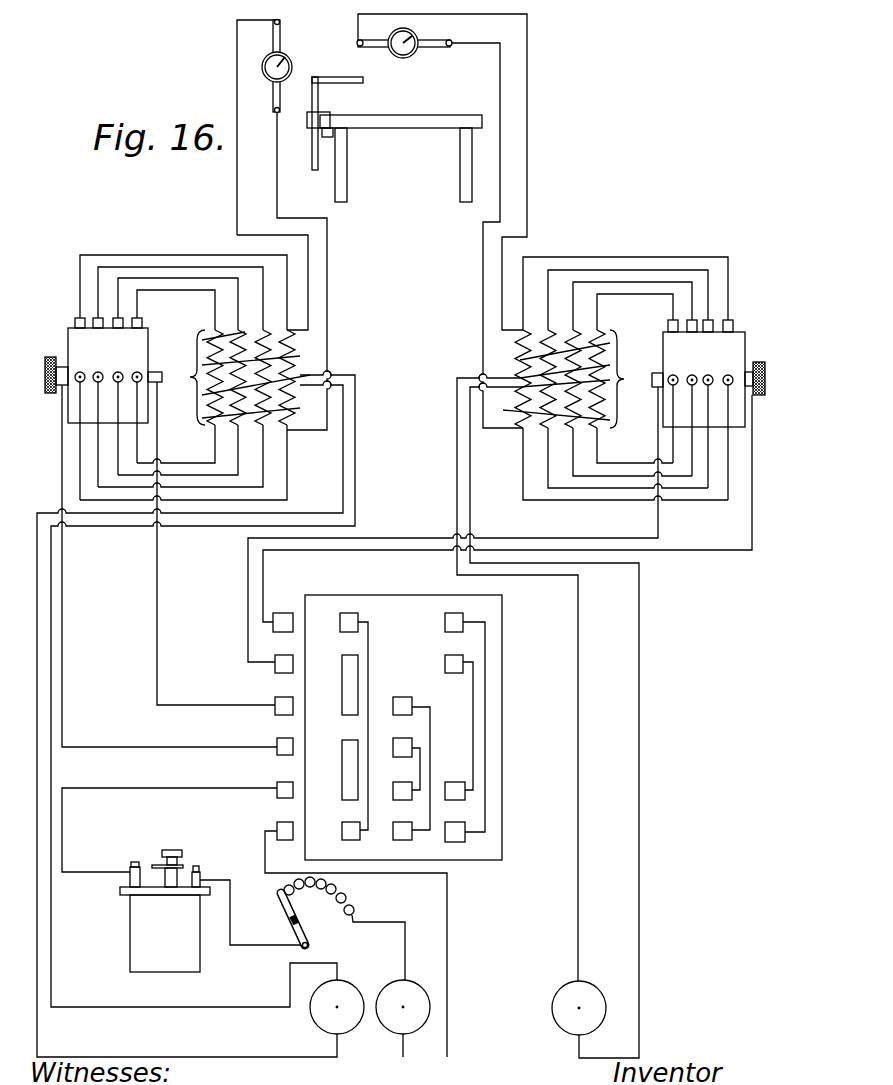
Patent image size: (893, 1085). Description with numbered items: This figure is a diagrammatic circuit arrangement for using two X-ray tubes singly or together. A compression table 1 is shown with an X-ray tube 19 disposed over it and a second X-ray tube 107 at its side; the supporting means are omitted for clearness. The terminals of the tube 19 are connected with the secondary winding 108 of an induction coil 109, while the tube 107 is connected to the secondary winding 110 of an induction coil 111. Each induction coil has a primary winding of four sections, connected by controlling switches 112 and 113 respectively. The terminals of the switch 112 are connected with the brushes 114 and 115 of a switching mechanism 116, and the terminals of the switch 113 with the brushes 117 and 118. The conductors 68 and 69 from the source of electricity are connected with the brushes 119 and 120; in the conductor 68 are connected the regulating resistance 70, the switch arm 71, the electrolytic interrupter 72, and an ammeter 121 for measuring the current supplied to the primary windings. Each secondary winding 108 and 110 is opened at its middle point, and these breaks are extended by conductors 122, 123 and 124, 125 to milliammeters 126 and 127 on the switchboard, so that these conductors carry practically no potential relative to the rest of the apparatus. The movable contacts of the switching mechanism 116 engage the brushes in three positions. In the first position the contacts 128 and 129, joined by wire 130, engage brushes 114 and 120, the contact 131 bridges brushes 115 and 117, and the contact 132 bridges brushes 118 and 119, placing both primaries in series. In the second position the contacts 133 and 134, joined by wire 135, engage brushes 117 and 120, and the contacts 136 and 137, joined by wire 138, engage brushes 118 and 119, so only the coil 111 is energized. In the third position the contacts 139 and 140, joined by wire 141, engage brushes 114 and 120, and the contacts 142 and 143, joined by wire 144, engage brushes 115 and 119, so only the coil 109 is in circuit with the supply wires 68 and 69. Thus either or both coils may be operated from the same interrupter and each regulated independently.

The compression table 1 is at (408, 122).
The X-ray tube 19 is at (432, 48).
The second X-ray tube 107 is at (273, 88).
The secondary winding 108 is at (512, 355).
The induction coil 109 is at (634, 379).
The secondary winding 110 is at (307, 355).
The induction coil 111 is at (185, 377).
The controlling switch 112 is at (735, 338).
The controlling switch 113 is at (73, 333).
The brush 114 is at (283, 612).
The brush 115 is at (284, 650).
The switching mechanism 116 is at (502, 712).
The brush 117 is at (277, 702).
The brush 118 is at (278, 743).
The brush 119 is at (275, 797).
The brush 120 is at (275, 825).
The ammeter 121 is at (408, 983).
The conductor 122 is at (578, 752).
The conductor 123 is at (639, 826).
The conductor 124 is at (342, 458).
The conductor 125 is at (355, 512).
The milliammeter 126 is at (558, 992).
The milliammeter 127 is at (345, 987).
The contact 128 is at (350, 613).
The contact 129 is at (343, 823).
The wire 130 is at (368, 663).
The contact 131 is at (342, 657).
The contact 132 is at (342, 742).
The contact 133 is at (402, 697).
The contact 134 is at (398, 834).
The wire 135 is at (430, 715).
The contact 136 is at (402, 738).
The contact 137 is at (403, 800).
The wire 138 is at (420, 770).
The contact 139 is at (463, 617).
The contact 140 is at (465, 840).
The wire 141 is at (485, 788).
The contact 142 is at (463, 657).
The contact 143 is at (452, 782).
The wire 144 is at (473, 742).
The conductor 68 is at (402, 1045).
The conductor 69 is at (447, 1035).
The regulating resistance 70 is at (344, 928).
The switch arm 71 is at (288, 923).
The electrolytic interrupter 72 is at (133, 917).